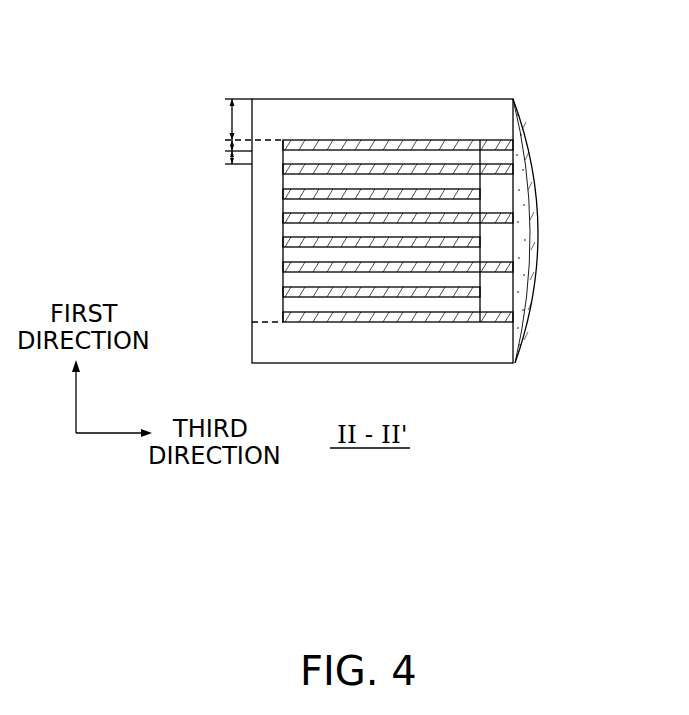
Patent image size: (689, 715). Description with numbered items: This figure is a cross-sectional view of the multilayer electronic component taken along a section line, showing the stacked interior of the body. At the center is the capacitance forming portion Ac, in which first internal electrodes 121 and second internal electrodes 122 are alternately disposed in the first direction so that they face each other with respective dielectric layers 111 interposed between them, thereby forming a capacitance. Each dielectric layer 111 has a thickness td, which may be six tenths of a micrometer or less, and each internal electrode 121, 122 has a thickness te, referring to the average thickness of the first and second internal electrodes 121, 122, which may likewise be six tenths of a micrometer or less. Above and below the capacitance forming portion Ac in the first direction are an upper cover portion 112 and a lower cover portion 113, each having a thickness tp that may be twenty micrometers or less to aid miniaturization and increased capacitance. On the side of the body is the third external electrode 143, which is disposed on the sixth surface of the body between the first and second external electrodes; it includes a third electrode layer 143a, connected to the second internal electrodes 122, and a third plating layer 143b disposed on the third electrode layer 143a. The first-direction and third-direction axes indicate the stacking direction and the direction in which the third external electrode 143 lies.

The upper cover portion 112 is at (387, 110).
The dielectric layer 111 is at (472, 158).
The first internal electrode 121 is at (470, 146).
The second internal electrode 122 is at (477, 168).
The lower cover portion 113 is at (500, 343).
The third external electrode 143 is at (596, 231).
The third electrode layer 143a is at (522, 254).
The third plating layer 143b is at (530, 297).
The thickness of cover portion tp is at (244, 119).
The thickness of internal electrode te is at (228, 145).
The thickness of dielectric layer td is at (226, 157).
The capacitance forming portion Ac is at (273, 233).